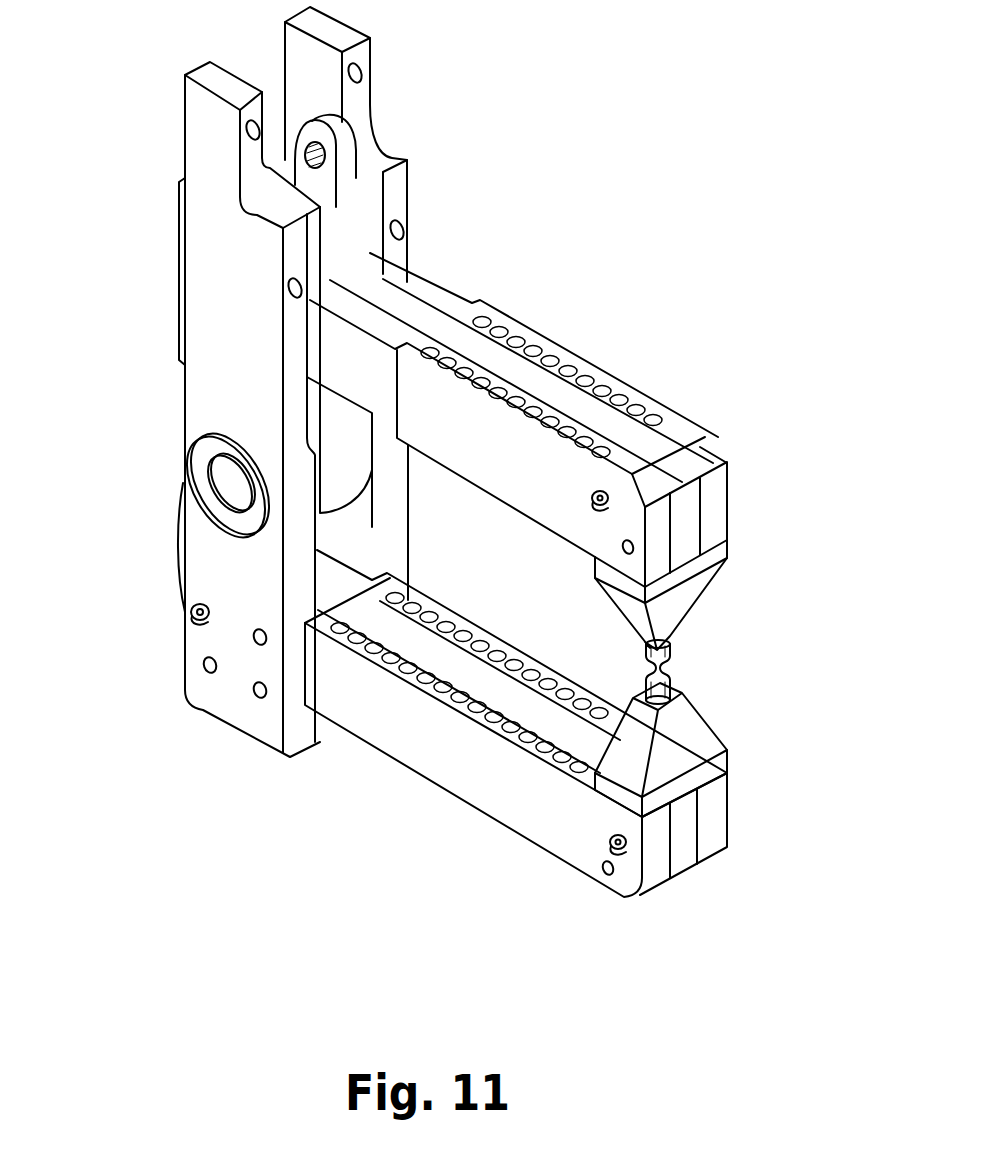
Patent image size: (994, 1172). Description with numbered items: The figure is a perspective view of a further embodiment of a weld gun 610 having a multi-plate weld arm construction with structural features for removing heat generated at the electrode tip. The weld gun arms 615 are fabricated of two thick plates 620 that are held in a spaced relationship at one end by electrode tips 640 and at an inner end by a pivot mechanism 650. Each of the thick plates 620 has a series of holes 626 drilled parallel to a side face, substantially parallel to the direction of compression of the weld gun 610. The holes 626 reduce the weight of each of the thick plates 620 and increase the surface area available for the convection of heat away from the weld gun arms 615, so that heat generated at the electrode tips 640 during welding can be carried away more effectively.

The weld gun 610 is at (648, 218).
The weld gun arms 615 is at (665, 401).
The thick plates 620 is at (548, 718).
The holes 626 is at (446, 625).
The electrode tips 640 is at (694, 600).
The pivot mechanism 650 is at (168, 640).